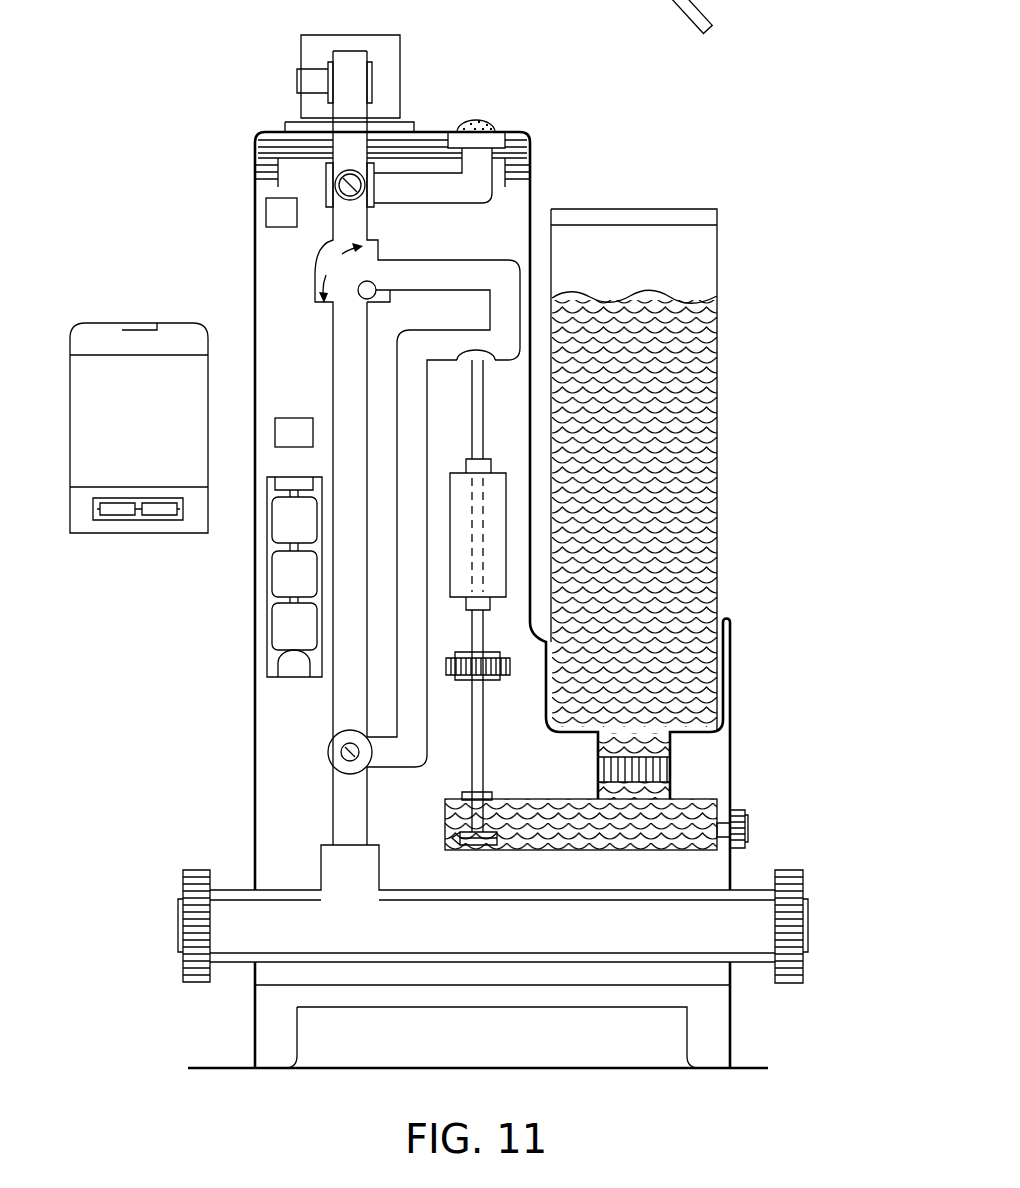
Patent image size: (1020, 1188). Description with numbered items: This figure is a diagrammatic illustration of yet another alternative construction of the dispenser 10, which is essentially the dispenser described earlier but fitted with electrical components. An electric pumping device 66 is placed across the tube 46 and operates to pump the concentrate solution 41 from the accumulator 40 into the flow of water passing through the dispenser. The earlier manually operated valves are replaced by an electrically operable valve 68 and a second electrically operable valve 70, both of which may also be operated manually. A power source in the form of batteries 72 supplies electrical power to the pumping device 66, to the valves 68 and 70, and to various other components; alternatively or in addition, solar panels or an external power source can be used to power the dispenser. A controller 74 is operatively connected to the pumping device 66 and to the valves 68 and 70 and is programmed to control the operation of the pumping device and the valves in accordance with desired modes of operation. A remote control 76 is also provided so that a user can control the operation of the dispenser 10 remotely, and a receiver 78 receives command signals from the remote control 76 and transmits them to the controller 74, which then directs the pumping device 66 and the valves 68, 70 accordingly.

The dispenser 10 is at (778, 92).
The accumulator 40 is at (718, 835).
The concentrate solution 41 is at (683, 422).
The tube 46 is at (483, 633).
The electric pumping device 66 is at (507, 532).
The electrically operable valve 68 is at (327, 757).
The electrically operable valve 70 is at (335, 184).
The batteries 72 is at (278, 633).
The controller 74 is at (275, 414).
The remote control 76 is at (108, 533).
The receiver 78 is at (266, 212).